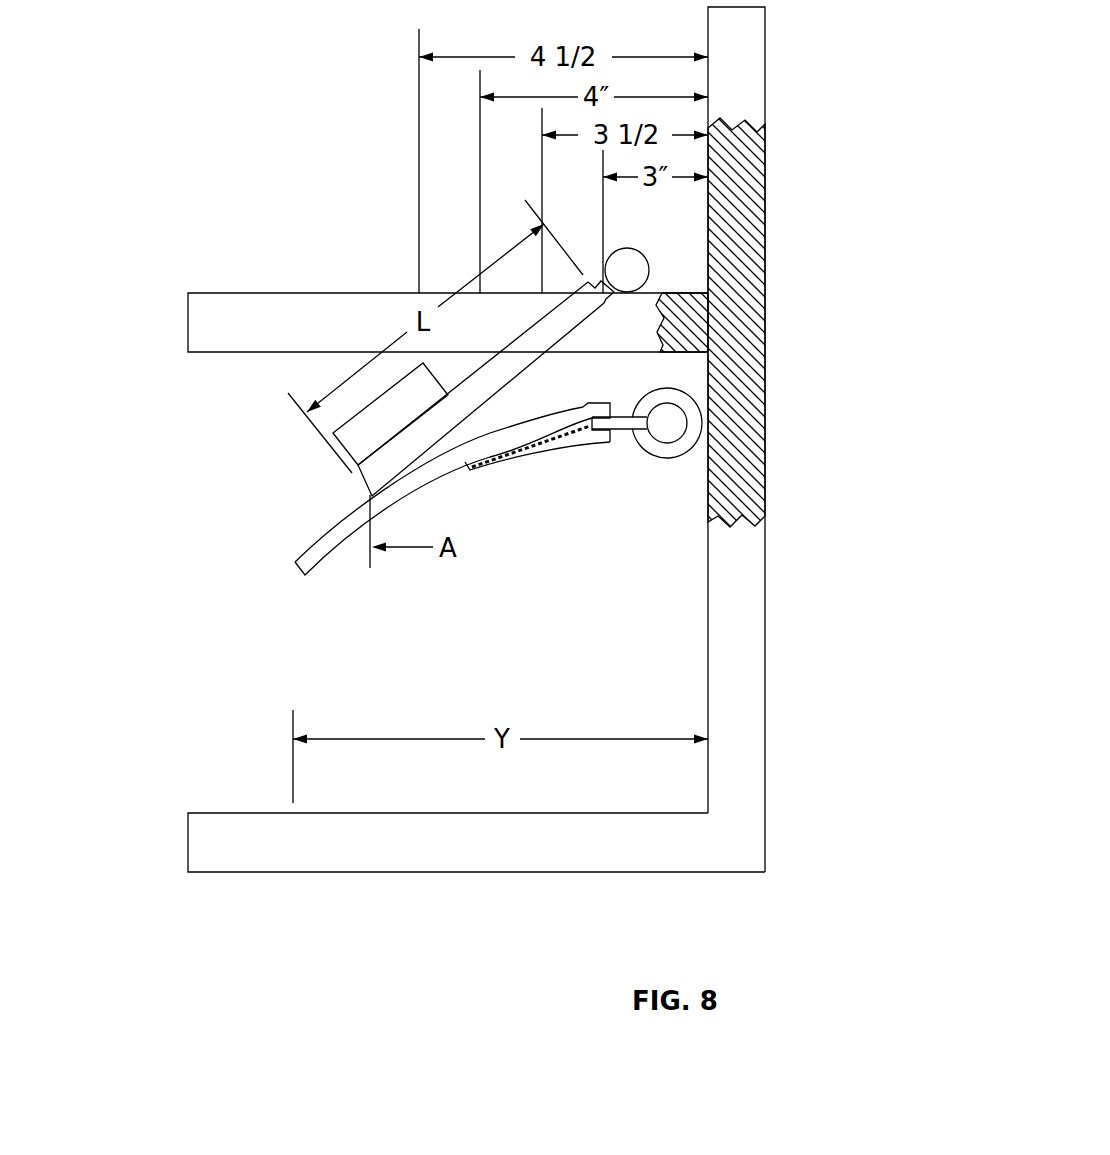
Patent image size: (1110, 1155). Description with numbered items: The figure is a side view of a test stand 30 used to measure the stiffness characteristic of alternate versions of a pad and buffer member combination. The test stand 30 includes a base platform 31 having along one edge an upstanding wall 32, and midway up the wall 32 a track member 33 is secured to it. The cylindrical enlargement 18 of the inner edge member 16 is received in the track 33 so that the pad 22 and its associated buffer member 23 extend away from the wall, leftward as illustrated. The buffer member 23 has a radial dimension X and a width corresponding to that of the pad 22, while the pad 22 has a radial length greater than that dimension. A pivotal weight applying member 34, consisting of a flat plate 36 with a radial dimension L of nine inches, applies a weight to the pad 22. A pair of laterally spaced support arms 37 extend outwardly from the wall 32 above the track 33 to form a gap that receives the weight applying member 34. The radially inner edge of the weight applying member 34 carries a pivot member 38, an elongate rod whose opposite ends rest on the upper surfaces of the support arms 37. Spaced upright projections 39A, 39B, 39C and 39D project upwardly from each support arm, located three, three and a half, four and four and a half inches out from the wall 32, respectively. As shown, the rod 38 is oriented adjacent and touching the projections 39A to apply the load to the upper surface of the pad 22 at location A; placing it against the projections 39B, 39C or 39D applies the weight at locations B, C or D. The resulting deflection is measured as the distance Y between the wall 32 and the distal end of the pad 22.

The inner edge member 16 is at (682, 402).
The cylindrical enlargement 18 is at (657, 428).
The pad 22 is at (333, 530).
The buffer member 23 is at (493, 455).
The test stand 30 is at (192, 213).
The base platform 31 is at (433, 843).
The upstanding wall 32 is at (757, 680).
The track member 33 is at (678, 452).
The pivotal weight applying member 34 is at (497, 388).
The flat plate 36 is at (525, 352).
The support arms 37 is at (270, 315).
The pivot member 38 is at (630, 280).
The upstanding projections 39A is at (603, 222).
The upstanding projections 39B is at (542, 170).
The upstanding projections 39C is at (480, 198).
The upstanding projections 39D is at (419, 232).